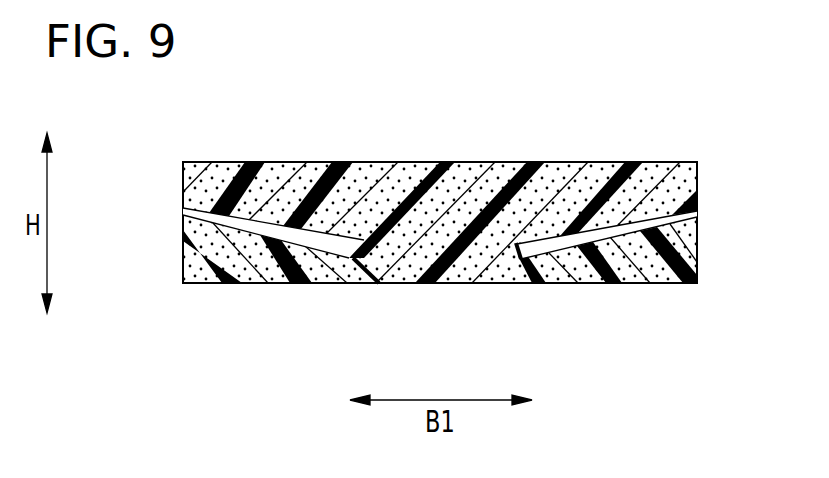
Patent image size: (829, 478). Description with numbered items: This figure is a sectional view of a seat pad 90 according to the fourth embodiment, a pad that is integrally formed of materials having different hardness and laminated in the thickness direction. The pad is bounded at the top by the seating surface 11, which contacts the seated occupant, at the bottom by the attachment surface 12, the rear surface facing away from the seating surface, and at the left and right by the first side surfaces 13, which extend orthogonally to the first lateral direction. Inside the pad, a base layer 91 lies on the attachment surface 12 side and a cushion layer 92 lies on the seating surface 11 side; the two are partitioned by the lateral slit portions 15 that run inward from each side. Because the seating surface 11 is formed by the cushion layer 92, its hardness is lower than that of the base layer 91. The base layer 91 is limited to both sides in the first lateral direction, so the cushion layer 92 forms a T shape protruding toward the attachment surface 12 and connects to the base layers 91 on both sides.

The seat pad 90 is at (692, 113).
The seating surface 11 is at (447, 163).
The cushion layer 92 is at (279, 172).
The attachment surface 12 is at (438, 284).
The base layer 91 is at (257, 284).
The first side surface 13 is at (183, 248).
The lateral slit portion 15 is at (172, 206).